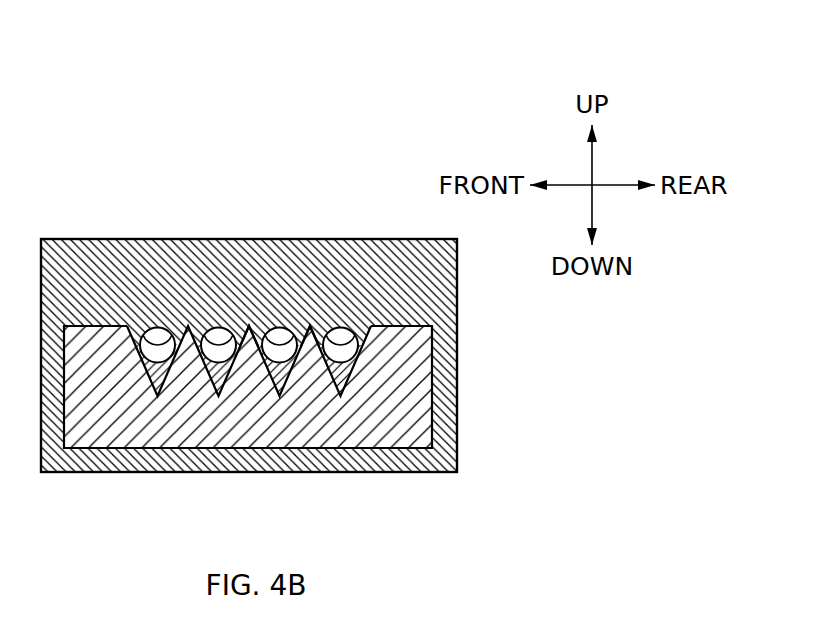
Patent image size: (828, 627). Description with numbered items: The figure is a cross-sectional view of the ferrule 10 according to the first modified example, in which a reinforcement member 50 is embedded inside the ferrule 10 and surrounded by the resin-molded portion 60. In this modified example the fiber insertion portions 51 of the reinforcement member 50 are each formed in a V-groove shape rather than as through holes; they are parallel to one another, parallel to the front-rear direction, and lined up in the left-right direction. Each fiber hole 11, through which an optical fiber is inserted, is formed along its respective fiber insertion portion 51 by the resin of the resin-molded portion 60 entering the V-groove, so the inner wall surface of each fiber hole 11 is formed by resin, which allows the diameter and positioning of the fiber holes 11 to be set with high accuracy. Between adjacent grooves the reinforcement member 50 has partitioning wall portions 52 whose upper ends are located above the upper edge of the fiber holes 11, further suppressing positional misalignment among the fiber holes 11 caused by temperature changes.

The ferrule 10 is at (101, 115).
The fiber hole 11 is at (175, 334).
The reinforcement member 50 is at (105, 437).
The fiber insertion portion 51 is at (163, 363).
The partitioning wall portion 52 is at (247, 335).
The resin-molded portion 60 is at (72, 248).